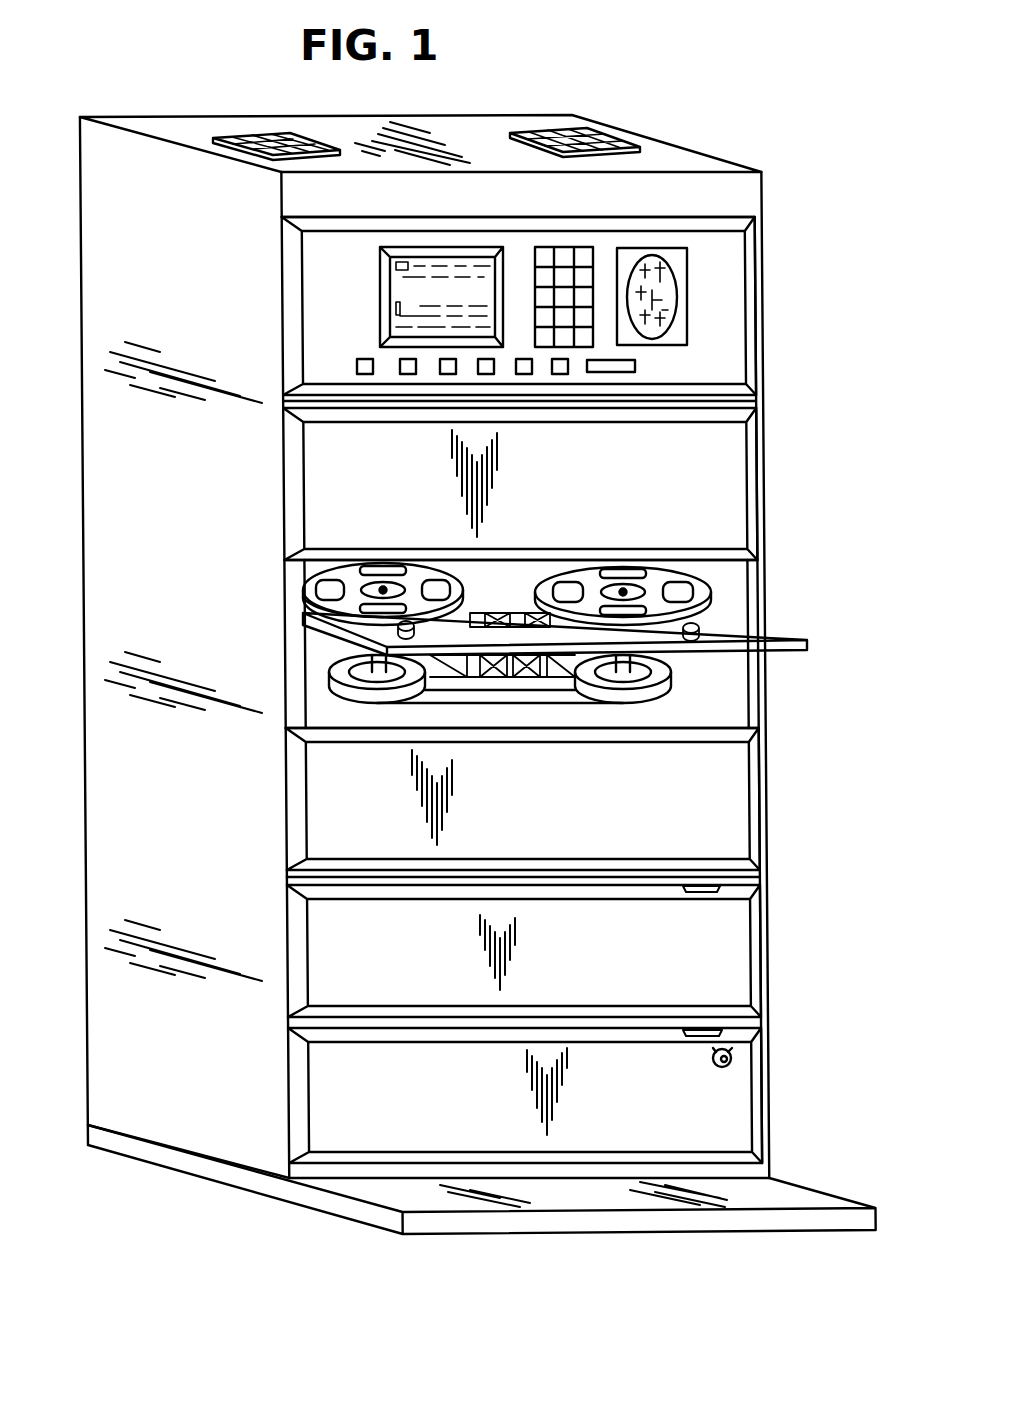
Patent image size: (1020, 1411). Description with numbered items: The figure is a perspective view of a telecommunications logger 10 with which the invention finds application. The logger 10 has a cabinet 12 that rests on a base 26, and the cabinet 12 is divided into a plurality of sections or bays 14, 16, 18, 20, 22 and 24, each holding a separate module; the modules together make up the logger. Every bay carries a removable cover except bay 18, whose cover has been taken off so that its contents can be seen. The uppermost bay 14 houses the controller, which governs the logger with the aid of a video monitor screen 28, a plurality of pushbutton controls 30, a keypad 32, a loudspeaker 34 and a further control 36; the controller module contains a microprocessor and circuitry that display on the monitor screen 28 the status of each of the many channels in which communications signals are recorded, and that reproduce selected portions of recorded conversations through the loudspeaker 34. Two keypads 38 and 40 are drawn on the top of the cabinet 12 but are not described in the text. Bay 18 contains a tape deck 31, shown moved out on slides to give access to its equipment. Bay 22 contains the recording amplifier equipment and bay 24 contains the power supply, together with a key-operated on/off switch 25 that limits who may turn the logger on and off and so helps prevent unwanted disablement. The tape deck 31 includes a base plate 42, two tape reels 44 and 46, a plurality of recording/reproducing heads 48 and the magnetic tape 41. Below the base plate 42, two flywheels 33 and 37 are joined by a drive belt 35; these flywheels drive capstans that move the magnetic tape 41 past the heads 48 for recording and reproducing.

The telecommunications logger 10 is at (737, 129).
The cabinet 12 is at (764, 185).
The uppermost bay 14 is at (778, 341).
The bay 16 is at (778, 512).
The bay 18 is at (797, 612).
The bay 20 is at (780, 803).
The bay 22 is at (783, 927).
The bay 24 is at (793, 1083).
The key-operated on/off switch 25 is at (730, 1066).
The base 26 is at (713, 1223).
The video monitor screen 28 is at (381, 291).
The pushbutton controls 30 is at (360, 350).
The tape deck 31 is at (680, 667).
The keypad 32 is at (545, 242).
The flywheel 33 is at (645, 703).
The loudspeaker 34 is at (652, 249).
The drive belt 35 is at (532, 699).
The control 36 is at (612, 373).
The flywheel 37 is at (333, 681).
The keypad 38 is at (235, 136).
The keypad 40 is at (600, 134).
The magnetic tape 41 is at (306, 597).
The base plate 42 is at (800, 652).
The tape reel 44 is at (322, 578).
The tape reel 46 is at (655, 571).
The recording/reproducing heads 48 is at (517, 607).